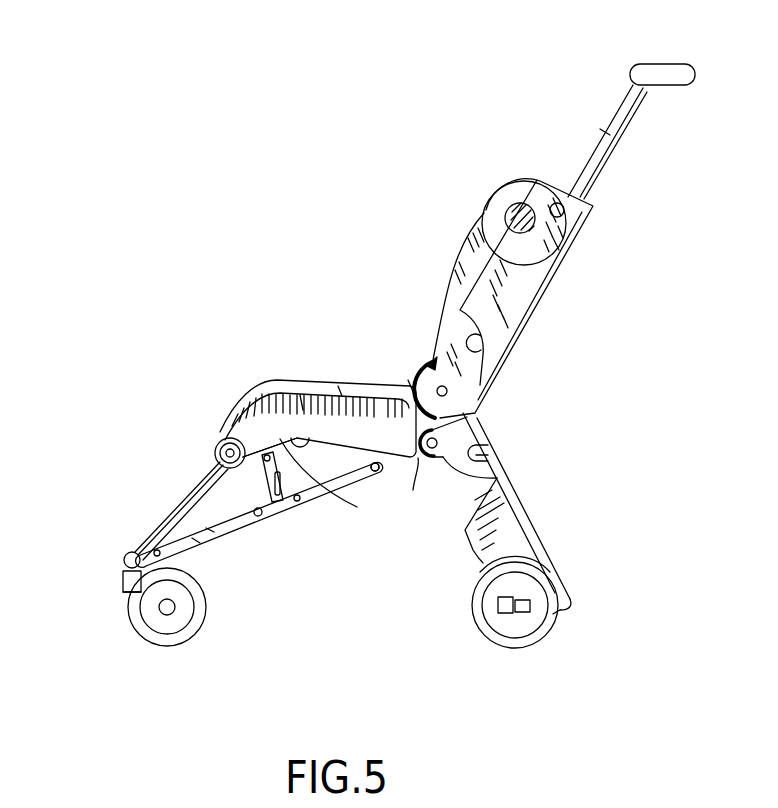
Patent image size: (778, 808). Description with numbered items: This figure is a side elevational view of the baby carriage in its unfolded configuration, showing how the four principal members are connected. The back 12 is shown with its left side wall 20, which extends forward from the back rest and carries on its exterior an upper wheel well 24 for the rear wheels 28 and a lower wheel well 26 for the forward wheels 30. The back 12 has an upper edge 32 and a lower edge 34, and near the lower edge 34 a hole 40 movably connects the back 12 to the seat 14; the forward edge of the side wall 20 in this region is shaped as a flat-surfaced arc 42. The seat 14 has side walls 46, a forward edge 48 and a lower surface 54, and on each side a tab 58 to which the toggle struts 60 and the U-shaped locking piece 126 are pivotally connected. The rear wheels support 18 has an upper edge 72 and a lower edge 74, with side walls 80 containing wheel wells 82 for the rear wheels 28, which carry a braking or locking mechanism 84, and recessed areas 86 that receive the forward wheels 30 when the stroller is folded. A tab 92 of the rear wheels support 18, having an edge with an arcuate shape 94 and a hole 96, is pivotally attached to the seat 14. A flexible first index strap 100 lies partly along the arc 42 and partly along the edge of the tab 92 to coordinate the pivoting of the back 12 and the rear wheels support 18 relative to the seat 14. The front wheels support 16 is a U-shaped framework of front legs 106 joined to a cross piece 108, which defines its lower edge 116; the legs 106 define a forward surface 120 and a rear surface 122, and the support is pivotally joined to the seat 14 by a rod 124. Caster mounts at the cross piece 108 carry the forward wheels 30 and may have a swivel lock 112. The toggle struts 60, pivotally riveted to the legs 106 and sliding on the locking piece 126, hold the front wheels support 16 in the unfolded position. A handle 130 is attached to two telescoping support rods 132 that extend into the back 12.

The back 12 is at (488, 220).
The seat 14 is at (382, 410).
The front wheels support 16 is at (165, 492).
The rear wheels support 18 is at (522, 517).
The left side wall 20 is at (515, 190).
The upper wheel well 24 is at (592, 208).
The lower wheel well 26 is at (483, 352).
The rear wheels 28 is at (492, 633).
The forward wheels 30 is at (168, 647).
The upper edge 32 is at (590, 207).
The lower edge 34 is at (460, 416).
The holes 40 is at (447, 391).
The flat-surfaced arc 42 is at (430, 360).
The seat side walls 46 is at (342, 385).
The forward edge 48 is at (215, 445).
The lower surface 54 is at (303, 395).
The tabs 58 is at (343, 465).
The toggle struts 60 is at (210, 530).
The upper edge 72 is at (478, 419).
The lower edge 74 is at (570, 607).
The side walls 80 is at (528, 542).
The wheel wells 82 is at (570, 587).
The braking or locking mechanism 84 is at (523, 612).
The recessed areas 86 is at (487, 452).
The left tab 92 is at (526, 496).
The arcuate shape 94 is at (413, 490).
The hole 96 is at (478, 430).
The first index strap 100 is at (413, 388).
The front legs 106 is at (177, 520).
The cross piece 108 is at (126, 573).
The swivel lock 112 is at (130, 592).
The lower edge 116 is at (126, 562).
The forward surface 120 is at (175, 540).
The rear surface 122 is at (195, 540).
The rod 124 is at (220, 430).
The locking piece 126 is at (287, 490).
The handle 130 is at (650, 63).
The telescoping support rods 132 is at (608, 130).